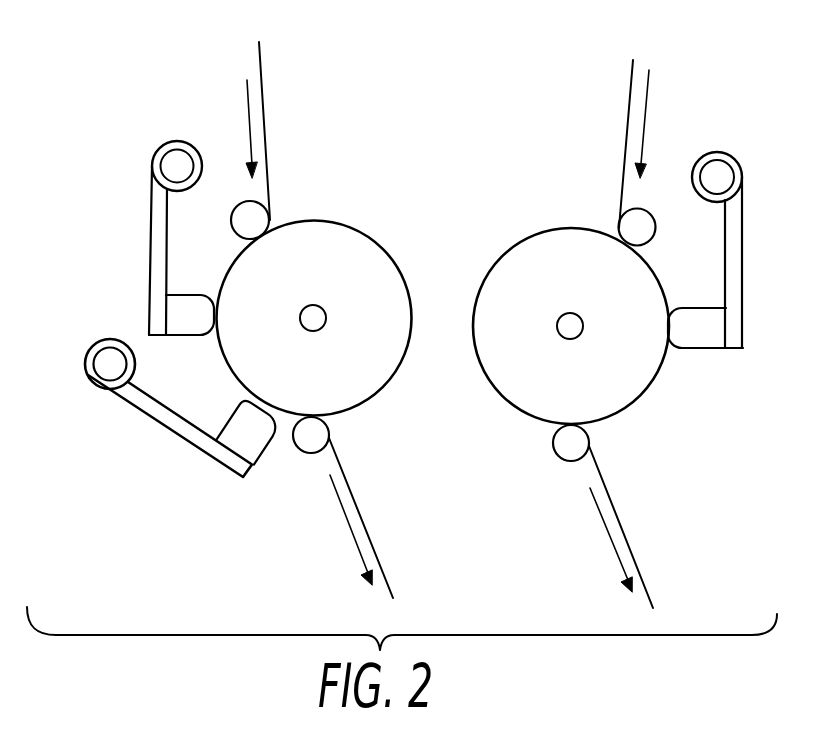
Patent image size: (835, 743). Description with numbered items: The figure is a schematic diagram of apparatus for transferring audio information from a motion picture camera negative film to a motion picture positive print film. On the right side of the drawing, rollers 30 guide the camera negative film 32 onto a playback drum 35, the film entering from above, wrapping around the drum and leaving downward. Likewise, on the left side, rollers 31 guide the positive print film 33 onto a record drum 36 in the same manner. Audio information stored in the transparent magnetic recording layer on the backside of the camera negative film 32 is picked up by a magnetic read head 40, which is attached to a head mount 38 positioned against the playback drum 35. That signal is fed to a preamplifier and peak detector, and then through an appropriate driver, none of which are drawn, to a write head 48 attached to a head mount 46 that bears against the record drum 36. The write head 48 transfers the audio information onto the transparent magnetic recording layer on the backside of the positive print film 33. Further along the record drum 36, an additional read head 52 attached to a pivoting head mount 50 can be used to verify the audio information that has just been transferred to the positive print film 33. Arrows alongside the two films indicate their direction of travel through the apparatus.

The rollers 30 is at (656, 227).
The rollers 31 is at (242, 203).
The camera negative film 32 is at (627, 108).
The positive print film 33 is at (263, 93).
The playback drum 35 is at (558, 227).
The record drum 36 is at (377, 240).
The head mount 38 is at (740, 207).
The magnetic read head 40 is at (698, 350).
The head mount 46 is at (150, 207).
The write head 48 is at (200, 293).
The head mount 50 is at (120, 403).
The read head 52 is at (263, 453).